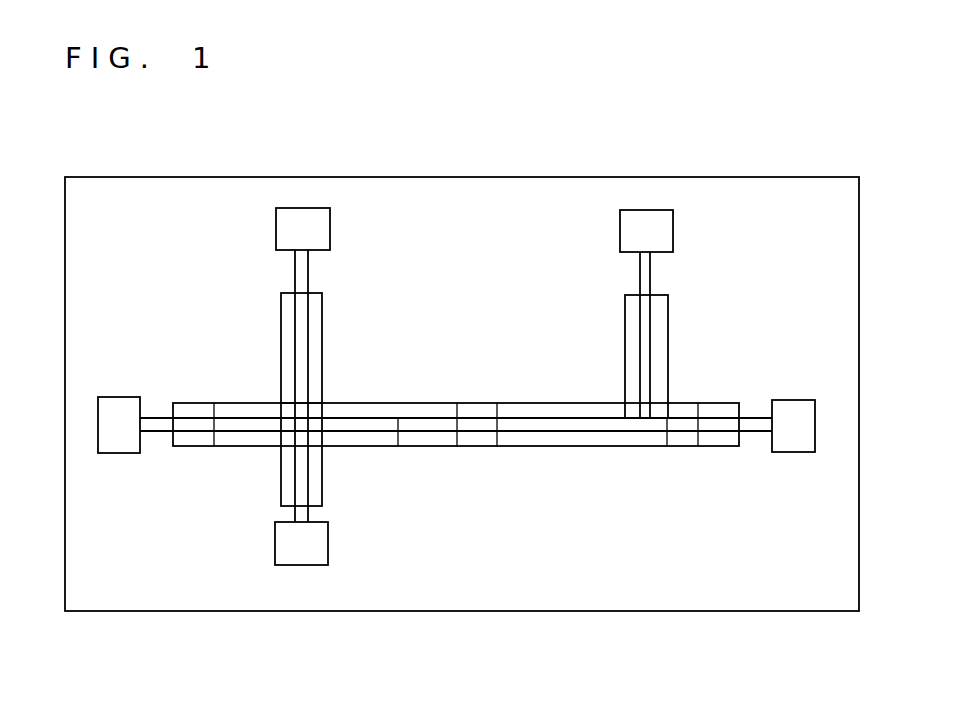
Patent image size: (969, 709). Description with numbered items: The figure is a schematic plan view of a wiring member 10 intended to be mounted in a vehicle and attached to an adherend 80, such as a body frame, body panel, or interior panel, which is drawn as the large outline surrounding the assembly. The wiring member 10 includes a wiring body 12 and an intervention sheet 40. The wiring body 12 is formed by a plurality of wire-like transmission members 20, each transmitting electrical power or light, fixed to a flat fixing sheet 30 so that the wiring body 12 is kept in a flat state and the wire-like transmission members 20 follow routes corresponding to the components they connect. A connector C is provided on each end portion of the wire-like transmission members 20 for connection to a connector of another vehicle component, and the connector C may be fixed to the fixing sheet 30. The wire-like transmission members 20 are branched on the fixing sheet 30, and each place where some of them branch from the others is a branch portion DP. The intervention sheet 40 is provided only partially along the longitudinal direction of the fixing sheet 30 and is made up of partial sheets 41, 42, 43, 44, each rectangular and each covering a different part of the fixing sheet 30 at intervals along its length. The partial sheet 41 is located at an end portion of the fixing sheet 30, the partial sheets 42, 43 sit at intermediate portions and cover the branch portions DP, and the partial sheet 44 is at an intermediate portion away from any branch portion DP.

The adherend 80 is at (519, 176).
The wiring member 10 is at (188, 274).
The wiring body 12 is at (456, 469).
The wire-like transmission member 20 is at (465, 497).
The fixing sheet 30 is at (445, 447).
The intervention sheet 40 is at (477, 395).
The partial sheet 41 is at (318, 350).
The partial sheet 42 is at (624, 437).
The partial sheet 43 is at (322, 385).
The partial sheet 44 is at (498, 417).
The connector C is at (325, 230).
The branch portion DP is at (292, 416).